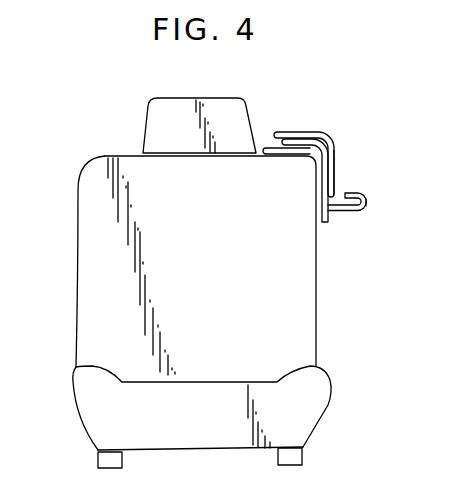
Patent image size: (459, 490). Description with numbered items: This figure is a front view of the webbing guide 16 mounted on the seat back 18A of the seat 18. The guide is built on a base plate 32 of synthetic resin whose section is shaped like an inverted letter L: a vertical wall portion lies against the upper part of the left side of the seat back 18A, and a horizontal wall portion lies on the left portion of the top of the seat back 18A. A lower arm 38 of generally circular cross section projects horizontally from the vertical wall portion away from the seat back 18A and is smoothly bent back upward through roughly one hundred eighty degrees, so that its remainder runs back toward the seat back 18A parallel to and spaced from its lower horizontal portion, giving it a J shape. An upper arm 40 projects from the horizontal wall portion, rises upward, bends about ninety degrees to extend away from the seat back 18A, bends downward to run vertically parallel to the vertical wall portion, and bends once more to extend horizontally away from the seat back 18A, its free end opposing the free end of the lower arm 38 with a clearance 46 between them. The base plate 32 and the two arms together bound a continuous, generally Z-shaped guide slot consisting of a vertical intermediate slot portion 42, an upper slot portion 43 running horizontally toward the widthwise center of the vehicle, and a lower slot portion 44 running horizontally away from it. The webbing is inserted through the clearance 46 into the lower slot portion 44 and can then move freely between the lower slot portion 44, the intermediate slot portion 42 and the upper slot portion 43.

The webbing guide 16 is at (338, 149).
The seat 18 is at (244, 283).
The seat back 18A is at (303, 282).
The base plate 32 is at (267, 148).
The lower arm 38 is at (367, 203).
The upper arm 40 is at (298, 131).
The intermediate slot portion 42 is at (329, 165).
The upper slot portion 43 is at (309, 139).
The lower slot portion 44 is at (338, 210).
The clearance 46 is at (344, 194).